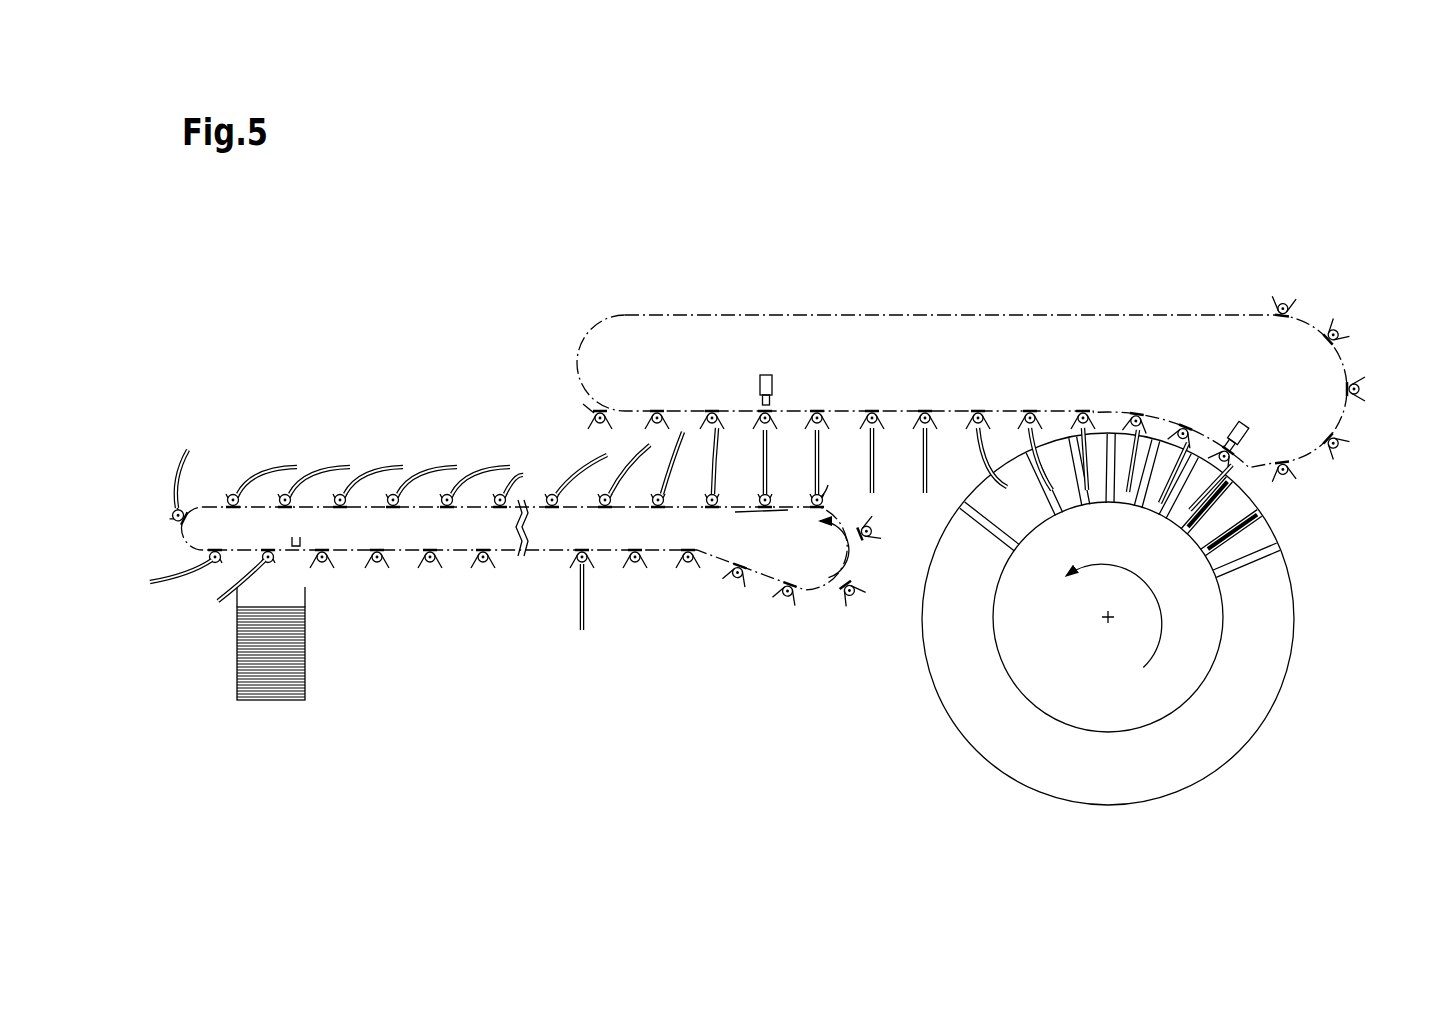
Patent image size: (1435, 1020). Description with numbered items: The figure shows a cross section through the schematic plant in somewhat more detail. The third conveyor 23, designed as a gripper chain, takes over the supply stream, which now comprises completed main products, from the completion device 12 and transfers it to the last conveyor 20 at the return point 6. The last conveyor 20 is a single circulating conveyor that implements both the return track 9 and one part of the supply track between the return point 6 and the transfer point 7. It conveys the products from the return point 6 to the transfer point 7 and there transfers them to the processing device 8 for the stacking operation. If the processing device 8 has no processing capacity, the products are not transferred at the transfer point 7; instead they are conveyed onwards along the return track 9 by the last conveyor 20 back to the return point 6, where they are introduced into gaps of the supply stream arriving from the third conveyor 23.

The return point 6 is at (750, 400).
The third conveyor 23 is at (845, 403).
The transfer point 7 is at (285, 566).
The last conveyor 20 is at (406, 564).
The return track 9 is at (463, 564).
The processing device 8 is at (216, 659).
The completion device 12 is at (1295, 699).